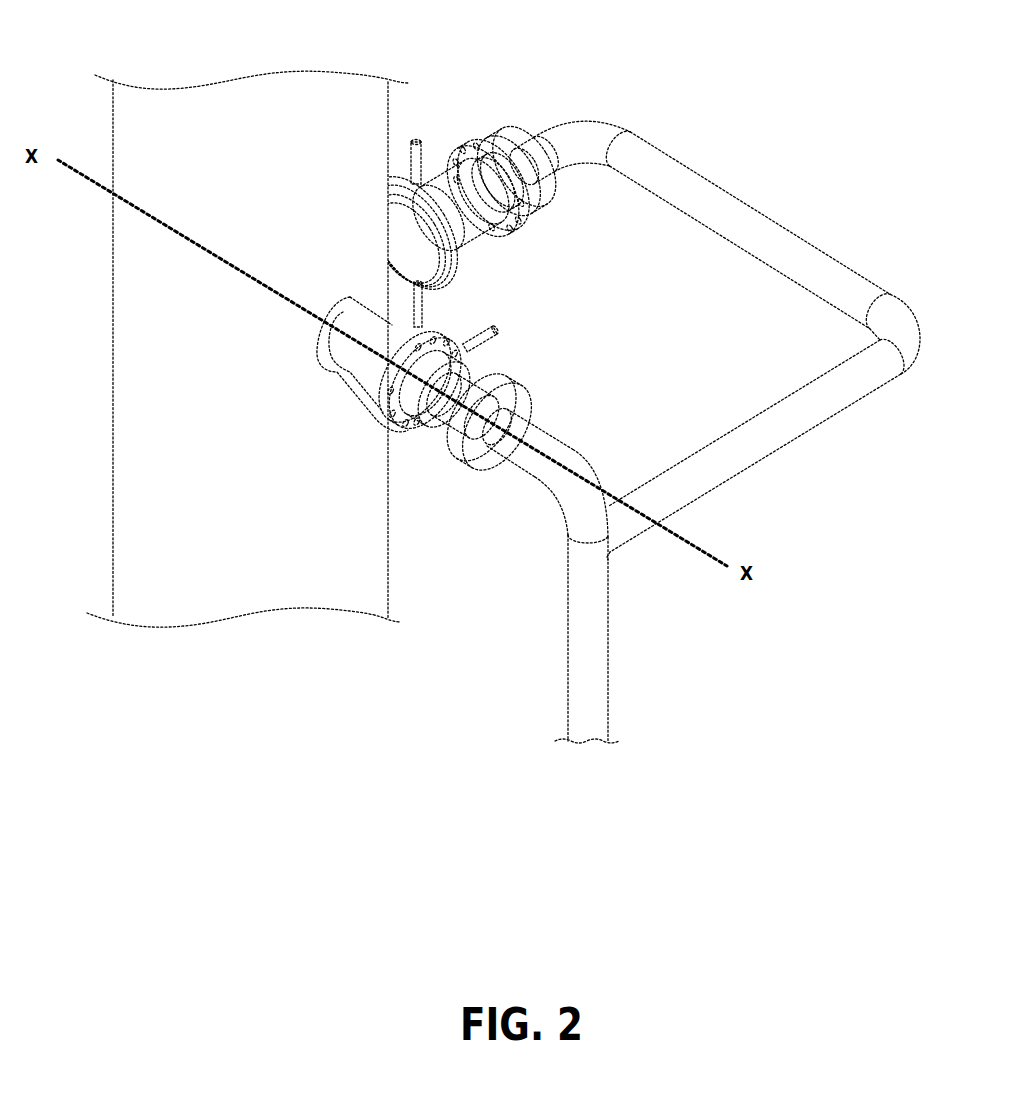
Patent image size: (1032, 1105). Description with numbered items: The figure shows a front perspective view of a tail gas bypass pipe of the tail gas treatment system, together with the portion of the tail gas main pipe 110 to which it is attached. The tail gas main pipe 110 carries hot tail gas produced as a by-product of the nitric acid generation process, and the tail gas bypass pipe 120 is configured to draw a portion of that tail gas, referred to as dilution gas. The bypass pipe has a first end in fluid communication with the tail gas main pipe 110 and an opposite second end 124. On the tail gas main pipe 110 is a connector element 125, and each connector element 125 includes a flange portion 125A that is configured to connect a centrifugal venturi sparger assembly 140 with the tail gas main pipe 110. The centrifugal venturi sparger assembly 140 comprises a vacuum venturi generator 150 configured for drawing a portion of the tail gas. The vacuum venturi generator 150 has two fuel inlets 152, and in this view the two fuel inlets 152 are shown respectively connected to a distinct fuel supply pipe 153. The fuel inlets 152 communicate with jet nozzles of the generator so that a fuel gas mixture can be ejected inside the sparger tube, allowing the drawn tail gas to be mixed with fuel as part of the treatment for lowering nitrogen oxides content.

The tail gas main pipe 110 is at (163, 162).
The tail gas bypass pipe 120 is at (728, 212).
The second end 124 is at (530, 185).
The connector element 125 is at (397, 257).
The flange portion 125A is at (428, 237).
The centrifugal venturi sparger assembly 140 is at (492, 146).
The vacuum venturi generator 150 is at (467, 232).
The fuel inlet 152 is at (392, 177).
The fuel supply pipe 153 is at (420, 172).